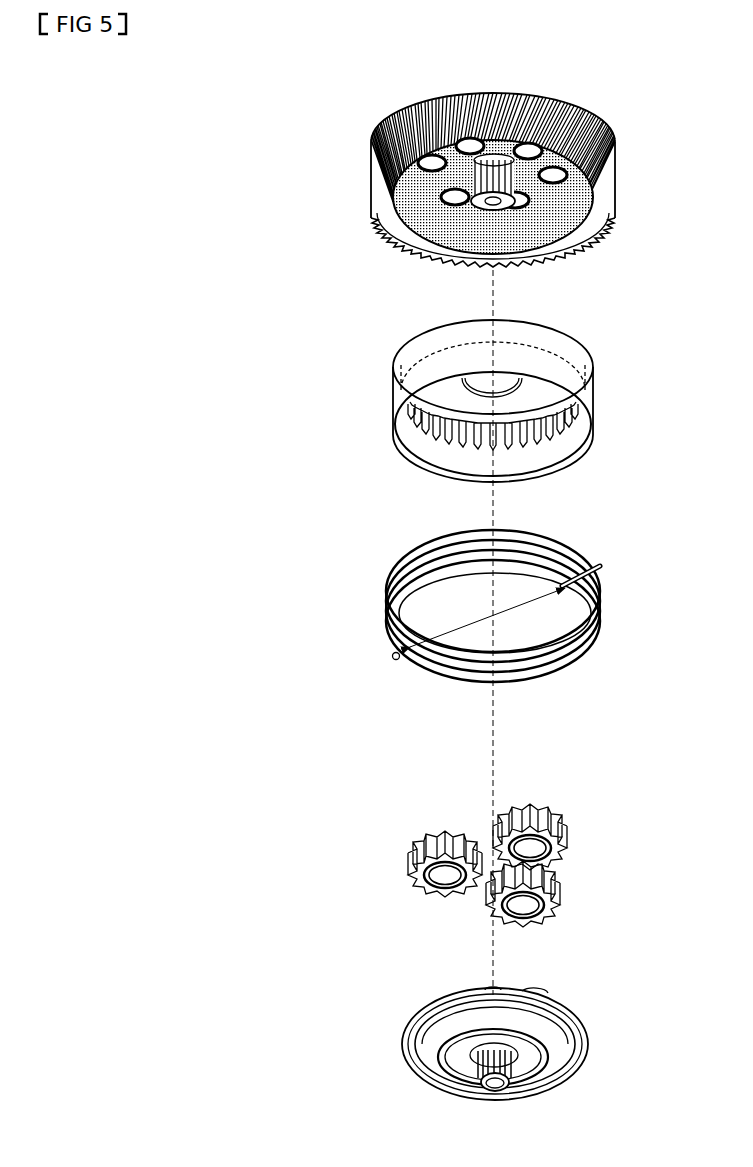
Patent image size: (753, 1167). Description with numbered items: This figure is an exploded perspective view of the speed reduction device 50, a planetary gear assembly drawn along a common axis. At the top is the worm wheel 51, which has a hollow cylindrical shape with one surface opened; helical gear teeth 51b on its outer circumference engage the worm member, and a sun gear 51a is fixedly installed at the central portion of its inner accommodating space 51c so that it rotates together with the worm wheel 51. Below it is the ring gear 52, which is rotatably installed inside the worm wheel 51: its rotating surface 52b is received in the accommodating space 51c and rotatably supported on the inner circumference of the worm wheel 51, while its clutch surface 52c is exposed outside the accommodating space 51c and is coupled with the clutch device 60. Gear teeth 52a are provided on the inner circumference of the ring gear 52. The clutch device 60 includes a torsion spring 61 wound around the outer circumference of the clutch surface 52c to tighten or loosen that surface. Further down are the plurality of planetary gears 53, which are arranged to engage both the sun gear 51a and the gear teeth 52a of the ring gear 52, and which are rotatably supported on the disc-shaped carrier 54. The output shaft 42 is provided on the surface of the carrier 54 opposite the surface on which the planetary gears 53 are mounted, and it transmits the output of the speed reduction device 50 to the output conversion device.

The speed reduction device 50 is at (288, 500).
The worm wheel 51 is at (368, 216).
The sun gear 51a is at (485, 200).
The helical gear teeth 51b is at (617, 158).
The accommodating space 51c is at (532, 232).
The ring gear 52 is at (380, 406).
The gear teeth 52a is at (570, 425).
The rotating surface 52b is at (567, 350).
The clutch surface 52c is at (588, 405).
The clutch device 60 is at (370, 598).
The torsion spring 61 is at (438, 673).
The planetary gears 53 is at (552, 818).
The carrier 54 is at (565, 1013).
The output shaft 42 is at (497, 1085).